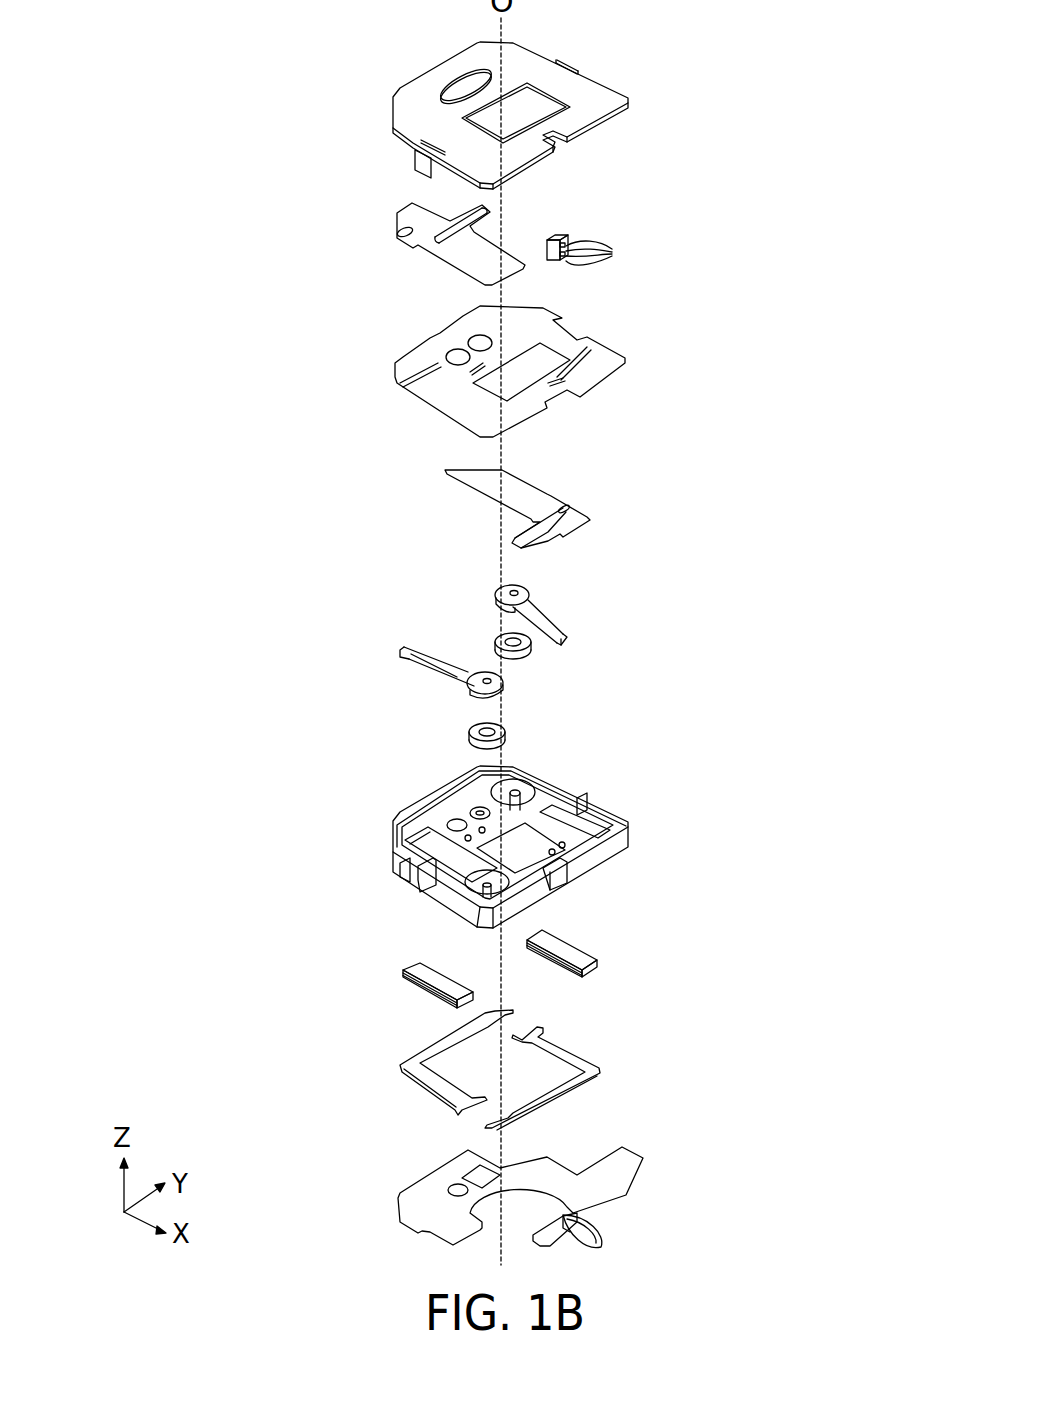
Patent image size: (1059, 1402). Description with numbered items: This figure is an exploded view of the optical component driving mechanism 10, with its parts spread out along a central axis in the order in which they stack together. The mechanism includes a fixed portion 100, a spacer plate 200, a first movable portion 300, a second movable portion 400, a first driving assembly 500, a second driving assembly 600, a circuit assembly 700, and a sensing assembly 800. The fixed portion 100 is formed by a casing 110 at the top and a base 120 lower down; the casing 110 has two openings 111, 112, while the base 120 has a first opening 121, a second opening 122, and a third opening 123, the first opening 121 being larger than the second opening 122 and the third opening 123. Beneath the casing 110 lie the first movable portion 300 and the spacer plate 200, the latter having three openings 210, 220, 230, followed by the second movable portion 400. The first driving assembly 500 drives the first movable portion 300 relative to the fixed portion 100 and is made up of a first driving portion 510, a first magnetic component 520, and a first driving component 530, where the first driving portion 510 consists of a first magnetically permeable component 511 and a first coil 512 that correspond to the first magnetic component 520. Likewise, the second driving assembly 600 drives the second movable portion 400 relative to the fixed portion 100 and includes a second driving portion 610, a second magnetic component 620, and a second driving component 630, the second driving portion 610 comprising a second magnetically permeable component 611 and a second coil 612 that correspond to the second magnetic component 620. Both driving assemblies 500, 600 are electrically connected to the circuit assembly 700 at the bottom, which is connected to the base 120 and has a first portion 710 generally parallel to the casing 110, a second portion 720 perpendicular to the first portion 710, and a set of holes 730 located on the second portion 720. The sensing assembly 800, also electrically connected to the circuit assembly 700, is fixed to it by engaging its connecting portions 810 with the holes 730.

The optical component driving mechanism 10 is at (836, 28).
The fixed portion 100 is at (149, 40).
The casing 110 is at (604, 99).
The opening 111 is at (538, 106).
The opening 112 is at (463, 96).
The base 120 is at (614, 861).
The first opening 121 is at (525, 792).
The second opening 122 is at (447, 826).
The third opening 123 is at (476, 809).
The spacer plate 200 is at (616, 356).
The opening 210 is at (527, 367).
The opening 220 is at (450, 352).
The opening 230 is at (478, 338).
The first movable portion 300 is at (462, 258).
The second movable portion 400 is at (524, 495).
The first driving assembly 500 is at (149, 183).
The first driving portion 510 is at (220, 170).
The first magnetically permeable component 511 is at (418, 1058).
The first coil 512 is at (423, 972).
The first magnetic component 520 is at (470, 732).
The first driving component 530 is at (434, 672).
The second driving assembly 600 is at (149, 398).
The second driving portion 610 is at (220, 385).
The second magnetically permeable component 611 is at (565, 1055).
The second coil 612 is at (575, 945).
The second magnetic component 620 is at (532, 653).
The second driving component 630 is at (553, 620).
The circuit assembly 700 is at (618, 1185).
The first portion 710 is at (423, 1190).
The second portion 720 is at (553, 1232).
The holes 730 is at (607, 1238).
The sensing assembly 800 is at (557, 237).
The connecting portions 810 is at (614, 257).